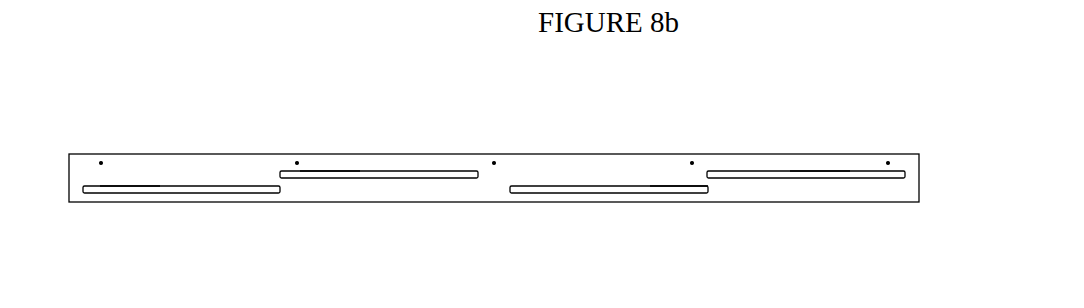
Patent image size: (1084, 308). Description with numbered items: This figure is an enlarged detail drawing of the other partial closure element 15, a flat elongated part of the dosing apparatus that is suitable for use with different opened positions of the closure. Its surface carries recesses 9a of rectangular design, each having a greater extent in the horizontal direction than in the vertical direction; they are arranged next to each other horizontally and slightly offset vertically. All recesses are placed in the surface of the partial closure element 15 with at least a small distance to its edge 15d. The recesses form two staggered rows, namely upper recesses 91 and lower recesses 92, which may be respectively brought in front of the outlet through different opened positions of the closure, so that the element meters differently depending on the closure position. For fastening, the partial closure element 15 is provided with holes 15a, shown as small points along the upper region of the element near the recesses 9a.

The partial closure element 15 is at (343, 98).
The holes 15a is at (101, 163).
The edge 15d is at (628, 153).
The recesses 9a is at (130, 184).
The upper recesses 91 is at (407, 173).
The lower recesses 92 is at (175, 187).